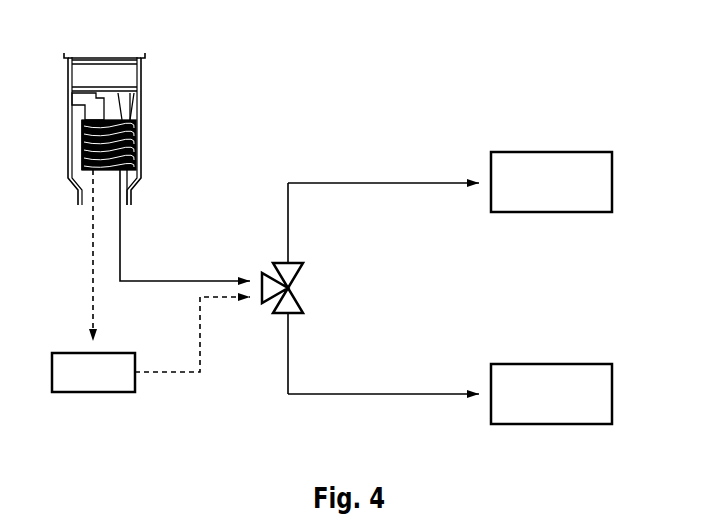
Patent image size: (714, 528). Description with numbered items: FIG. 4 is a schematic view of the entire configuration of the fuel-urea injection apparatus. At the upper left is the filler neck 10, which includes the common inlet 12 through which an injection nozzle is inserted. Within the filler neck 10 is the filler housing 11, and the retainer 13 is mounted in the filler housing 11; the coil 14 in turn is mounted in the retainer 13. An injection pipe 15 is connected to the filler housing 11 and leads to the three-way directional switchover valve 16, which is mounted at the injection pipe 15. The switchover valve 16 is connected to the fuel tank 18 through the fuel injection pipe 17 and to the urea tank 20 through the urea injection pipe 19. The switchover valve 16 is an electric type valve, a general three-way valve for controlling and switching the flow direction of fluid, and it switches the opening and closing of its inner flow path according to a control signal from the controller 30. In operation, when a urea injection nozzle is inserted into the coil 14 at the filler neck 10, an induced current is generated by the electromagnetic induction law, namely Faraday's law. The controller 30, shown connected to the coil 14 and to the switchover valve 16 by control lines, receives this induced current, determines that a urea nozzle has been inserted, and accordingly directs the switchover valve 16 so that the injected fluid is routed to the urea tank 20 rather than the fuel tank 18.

The filler neck 10 is at (164, 106).
The filler housing 11 is at (140, 146).
The common inlet 12 is at (141, 56).
The retainer 13 is at (82, 143).
The coil 14 is at (113, 123).
The injection pipe 15 is at (160, 281).
The three-way directional switchover valve 16 is at (301, 291).
The fuel injection pipe 17 is at (328, 184).
The fuel tank 18 is at (612, 183).
The urea injection pipe 19 is at (312, 395).
The urea tank 20 is at (612, 394).
The controller 30 is at (93, 393).